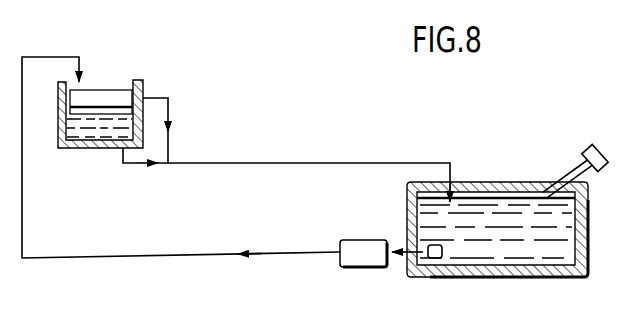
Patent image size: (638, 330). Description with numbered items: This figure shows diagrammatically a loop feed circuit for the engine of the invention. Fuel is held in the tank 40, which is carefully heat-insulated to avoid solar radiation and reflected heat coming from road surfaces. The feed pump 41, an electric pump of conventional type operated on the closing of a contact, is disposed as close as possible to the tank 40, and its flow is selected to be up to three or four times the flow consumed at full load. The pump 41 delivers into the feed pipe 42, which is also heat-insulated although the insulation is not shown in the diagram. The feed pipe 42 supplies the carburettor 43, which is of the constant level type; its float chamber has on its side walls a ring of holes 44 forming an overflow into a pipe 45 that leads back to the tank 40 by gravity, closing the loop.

The tank 40 is at (533, 278).
The feed pump 41 is at (360, 268).
The feed pipe 42 is at (180, 257).
The carburettor 43 is at (83, 150).
The ring of holes 44 is at (143, 102).
The return pipe 45 is at (312, 162).